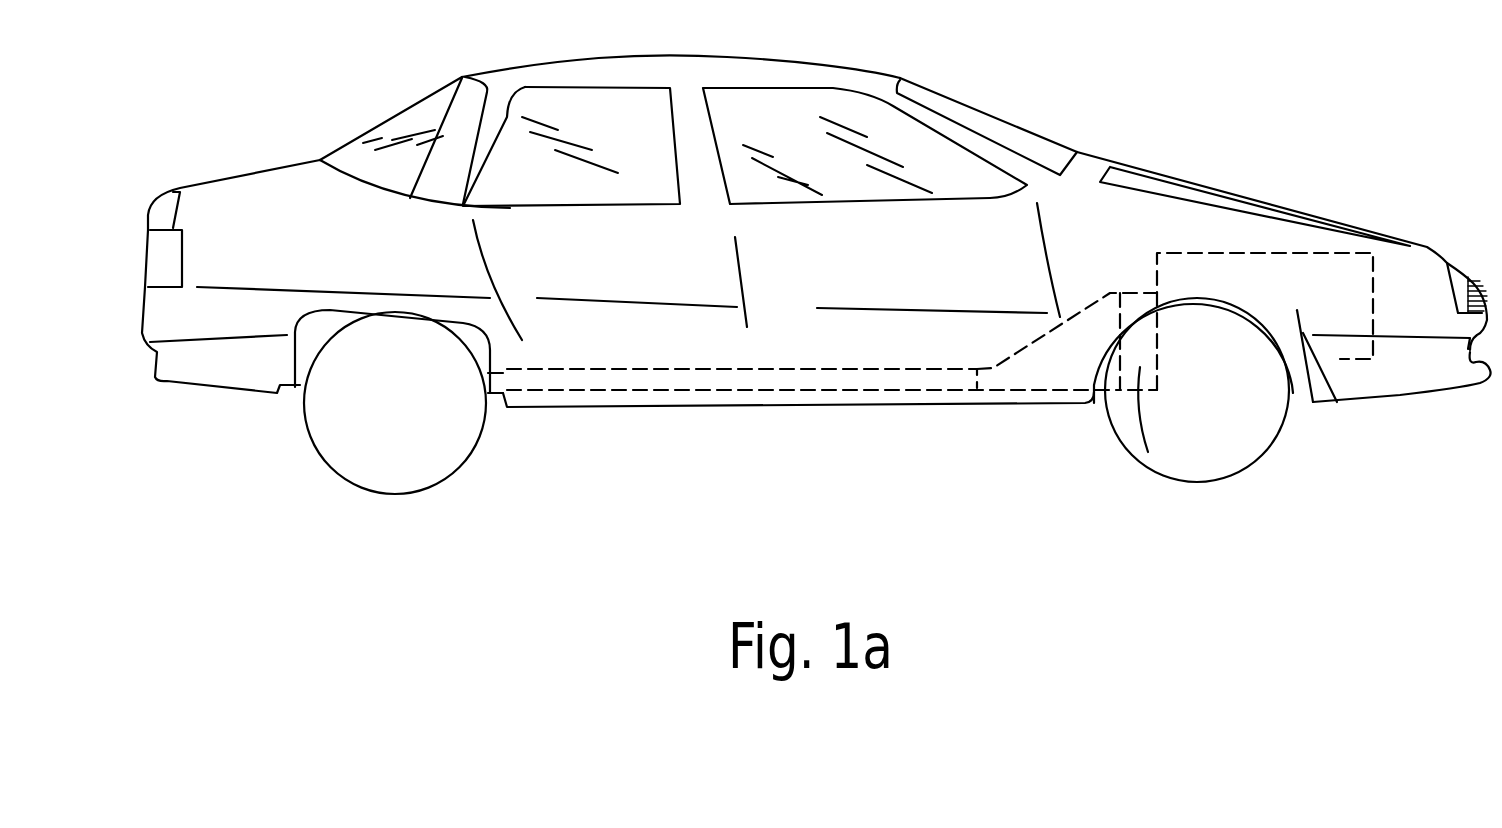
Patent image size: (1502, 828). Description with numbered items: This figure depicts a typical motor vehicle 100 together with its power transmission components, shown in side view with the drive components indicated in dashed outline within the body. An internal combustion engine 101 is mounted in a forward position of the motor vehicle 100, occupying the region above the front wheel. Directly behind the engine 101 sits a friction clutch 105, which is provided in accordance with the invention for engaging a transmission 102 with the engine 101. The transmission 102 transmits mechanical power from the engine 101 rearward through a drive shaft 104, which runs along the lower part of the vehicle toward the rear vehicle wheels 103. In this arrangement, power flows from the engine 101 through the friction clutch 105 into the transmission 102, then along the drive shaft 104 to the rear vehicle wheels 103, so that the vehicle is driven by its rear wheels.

The motor vehicle 100 is at (1358, 558).
The internal combustion engine 101 is at (1315, 360).
The transmission 102 is at (1050, 370).
The rear vehicle wheels 103 is at (425, 460).
The drive shaft 104 is at (750, 390).
The friction clutch 105 is at (1134, 452).